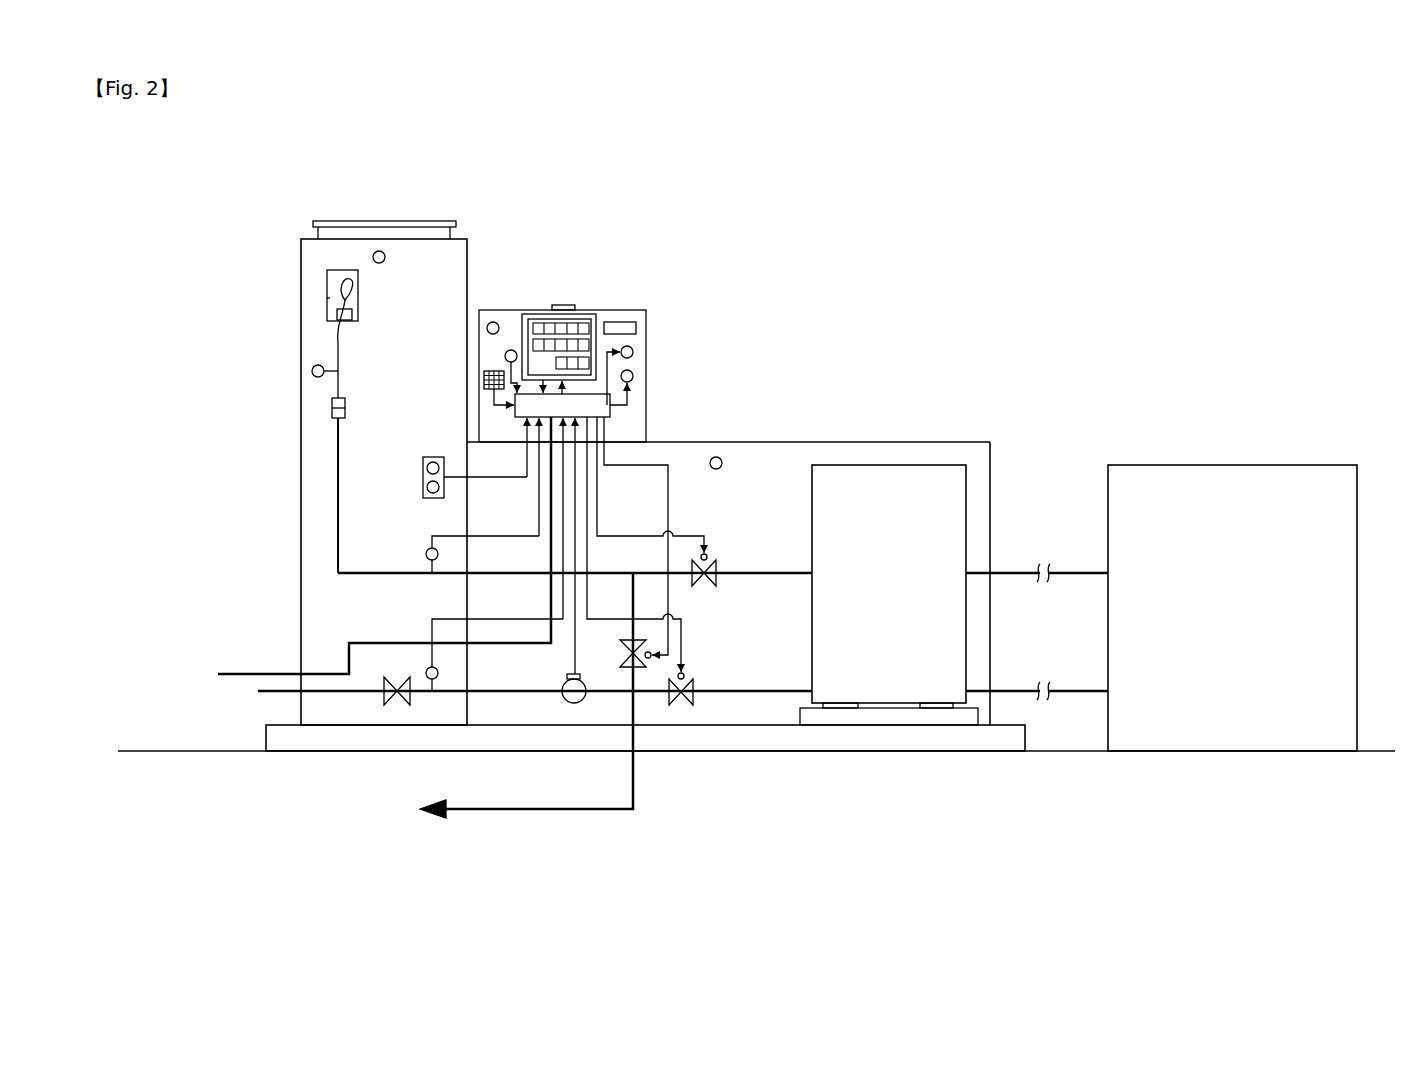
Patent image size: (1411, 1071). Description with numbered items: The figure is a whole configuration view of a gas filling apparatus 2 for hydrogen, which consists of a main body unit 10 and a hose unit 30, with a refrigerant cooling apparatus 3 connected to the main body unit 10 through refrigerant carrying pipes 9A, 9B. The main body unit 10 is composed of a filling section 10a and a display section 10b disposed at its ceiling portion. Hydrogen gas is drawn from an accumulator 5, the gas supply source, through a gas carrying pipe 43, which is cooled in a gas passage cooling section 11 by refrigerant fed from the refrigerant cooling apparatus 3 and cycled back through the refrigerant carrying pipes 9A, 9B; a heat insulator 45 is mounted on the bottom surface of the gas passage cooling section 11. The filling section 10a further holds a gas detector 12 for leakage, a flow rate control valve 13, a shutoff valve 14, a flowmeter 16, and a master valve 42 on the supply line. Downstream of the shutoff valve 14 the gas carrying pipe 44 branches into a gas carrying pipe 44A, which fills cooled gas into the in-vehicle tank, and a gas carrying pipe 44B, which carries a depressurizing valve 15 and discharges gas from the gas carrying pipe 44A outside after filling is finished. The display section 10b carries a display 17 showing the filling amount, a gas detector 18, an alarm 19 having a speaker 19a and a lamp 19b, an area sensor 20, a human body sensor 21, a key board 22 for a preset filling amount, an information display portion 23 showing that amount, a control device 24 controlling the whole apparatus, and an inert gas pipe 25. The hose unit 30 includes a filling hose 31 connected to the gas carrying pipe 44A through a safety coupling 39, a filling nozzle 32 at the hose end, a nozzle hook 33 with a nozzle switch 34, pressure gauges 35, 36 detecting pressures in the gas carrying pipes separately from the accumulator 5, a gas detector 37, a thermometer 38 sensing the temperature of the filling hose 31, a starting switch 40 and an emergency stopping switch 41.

The gas filling apparatus 2 is at (921, 391).
The refrigerant cooling apparatus 3 is at (1302, 465).
The accumulator 5 is at (452, 691).
The refrigerant carrying pipe 9A is at (1010, 573).
The refrigerant carrying pipe 9B is at (1010, 691).
The main body unit 10 is at (737, 390).
The filling section 10a is at (663, 442).
The display section 10b is at (646, 413).
The gas passage cooling section 11 is at (905, 465).
The gas detector 12 is at (721, 458).
The flow rate control valve 13 is at (675, 704).
The shutoff valve 14 is at (698, 583).
The depressurizing valve 15 is at (628, 666).
The flowmeter 16 is at (568, 702).
The display 17 is at (587, 320).
The gas detector 18 is at (493, 322).
The alarm 19 is at (691, 344).
The speaker 19a is at (633, 376).
The lamp 19b is at (633, 352).
The area sensor 20 is at (563, 305).
The human body sensor 21 is at (511, 350).
The key board 22 is at (493, 370).
The information display portion 23 is at (636, 328).
The control device 24 is at (640, 407).
The inert gas pipe 25 is at (233, 672).
The hose unit 30 is at (305, 239).
The filling hose 31 is at (339, 333).
The filling nozzle 32 is at (327, 298).
The nozzle hook 33 is at (327, 280).
The nozzle switch 34 is at (337, 313).
The pressure gauge 35 is at (427, 668).
The pressure gauge 36 is at (426, 554).
The gas detector 37 is at (379, 251).
The thermometer 38 is at (312, 371).
The safety coupling 39 is at (332, 410).
The starting switch 40 is at (423, 462).
The emergency stopping switch 41 is at (423, 480).
The master valve 42 is at (397, 705).
The gas carrying pipe 43 is at (334, 693).
The gas carrying pipe 44 is at (782, 573).
The gas carrying pipe 44A is at (363, 573).
The gas carrying pipe 44B is at (637, 788).
The heat insulator 45 is at (841, 709).